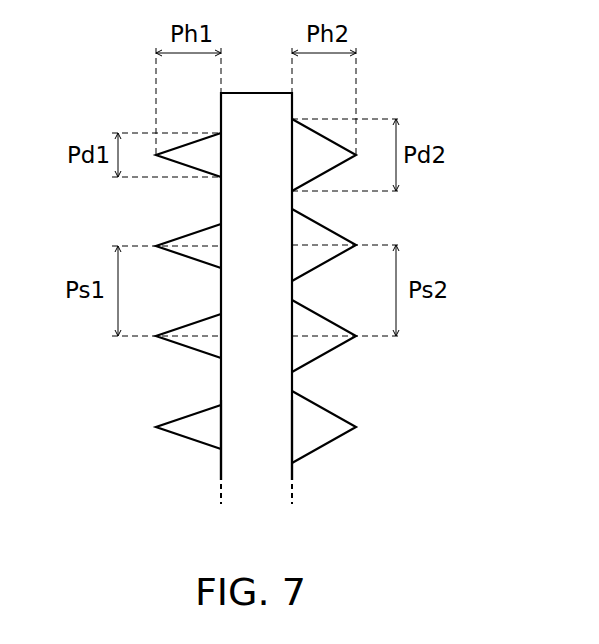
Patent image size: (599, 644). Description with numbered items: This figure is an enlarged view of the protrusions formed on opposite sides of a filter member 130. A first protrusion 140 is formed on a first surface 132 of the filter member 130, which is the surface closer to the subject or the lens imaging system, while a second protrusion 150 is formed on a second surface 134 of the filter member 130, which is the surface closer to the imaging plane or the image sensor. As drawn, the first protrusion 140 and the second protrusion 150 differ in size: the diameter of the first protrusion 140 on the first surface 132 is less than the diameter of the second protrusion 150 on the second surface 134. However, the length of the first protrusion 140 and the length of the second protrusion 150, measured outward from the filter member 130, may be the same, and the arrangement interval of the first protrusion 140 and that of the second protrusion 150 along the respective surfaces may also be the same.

The filter member 130 is at (258, 480).
The first surface 132 is at (218, 467).
The second surface 134 is at (295, 467).
The first protrusion 140 is at (187, 413).
The second protrusion 150 is at (322, 407).